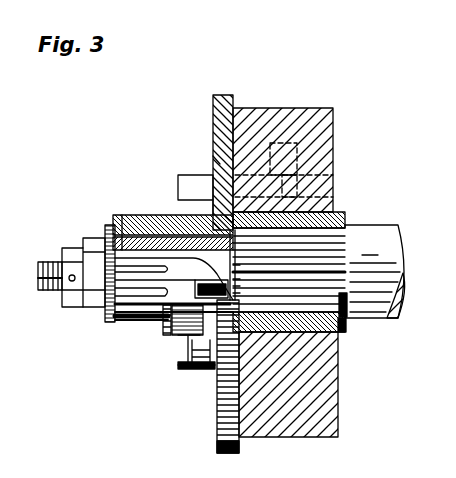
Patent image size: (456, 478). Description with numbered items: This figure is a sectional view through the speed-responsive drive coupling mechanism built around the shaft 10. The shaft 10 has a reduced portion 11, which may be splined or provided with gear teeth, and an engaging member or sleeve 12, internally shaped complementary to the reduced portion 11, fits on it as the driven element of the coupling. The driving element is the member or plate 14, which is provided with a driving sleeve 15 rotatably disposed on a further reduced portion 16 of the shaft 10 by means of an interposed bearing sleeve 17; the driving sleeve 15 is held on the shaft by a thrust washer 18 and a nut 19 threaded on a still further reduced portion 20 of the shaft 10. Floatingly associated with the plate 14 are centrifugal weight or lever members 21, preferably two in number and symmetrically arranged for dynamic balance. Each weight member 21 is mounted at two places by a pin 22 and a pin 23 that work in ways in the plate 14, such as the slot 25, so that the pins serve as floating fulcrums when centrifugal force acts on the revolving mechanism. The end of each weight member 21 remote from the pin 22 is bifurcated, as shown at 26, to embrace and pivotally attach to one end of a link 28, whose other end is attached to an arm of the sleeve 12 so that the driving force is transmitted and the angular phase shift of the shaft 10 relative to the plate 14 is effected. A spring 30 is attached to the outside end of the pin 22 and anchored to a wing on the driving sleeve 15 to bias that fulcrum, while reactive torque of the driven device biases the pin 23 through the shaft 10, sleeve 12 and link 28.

The shaft 10 is at (375, 228).
The reduced portion 11 is at (346, 302).
The engaging member or sleeve 12 is at (344, 322).
The member or plate 14 is at (215, 96).
The driving sleeve 15 is at (160, 342).
The reduced portion 16 is at (190, 256).
The bearing sleeve 17 is at (127, 226).
The thrust washer 18 is at (104, 322).
The nut 19 is at (92, 305).
The further reduced portion 20 is at (44, 262).
The centrifugal weight or lever member 21 is at (325, 121).
The pin 22 is at (187, 373).
The pin 23 is at (190, 176).
The slot 25 is at (212, 160).
The bifurcated end 26 is at (288, 140).
The link 28 is at (330, 212).
The spring 30 is at (165, 332).